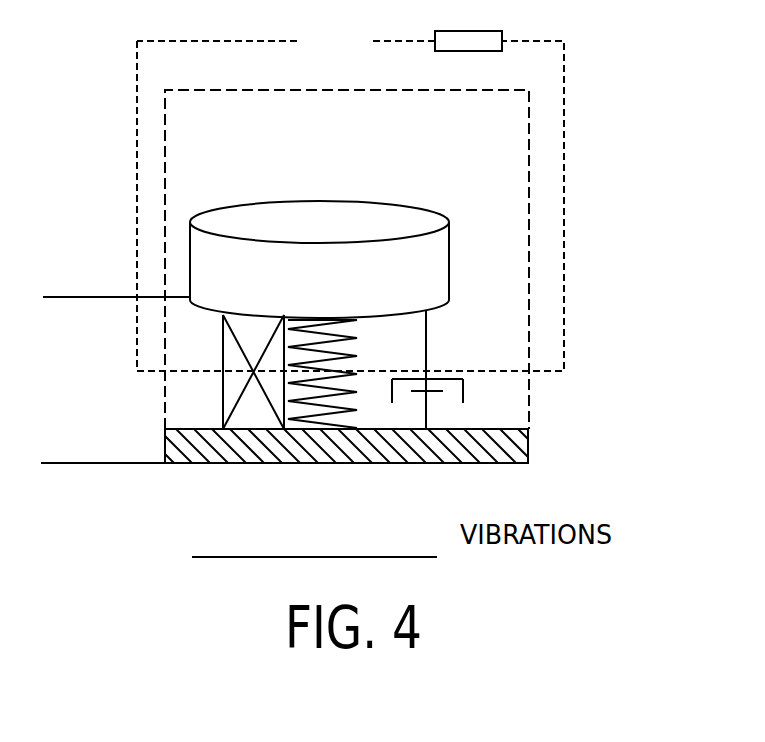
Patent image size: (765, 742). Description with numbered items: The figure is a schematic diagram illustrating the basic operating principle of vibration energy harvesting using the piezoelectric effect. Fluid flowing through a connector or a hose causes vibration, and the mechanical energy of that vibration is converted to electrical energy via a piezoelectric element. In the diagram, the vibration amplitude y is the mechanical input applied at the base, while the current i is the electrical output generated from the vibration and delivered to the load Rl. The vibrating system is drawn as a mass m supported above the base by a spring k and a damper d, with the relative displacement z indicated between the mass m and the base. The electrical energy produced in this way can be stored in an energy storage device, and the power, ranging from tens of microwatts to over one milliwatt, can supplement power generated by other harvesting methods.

The current i is at (362, 41).
The load resistor Rl is at (468, 25).
The seismic mass m is at (319, 259).
The spring stiffness k is at (336, 374).
The damper d is at (444, 369).
The relative displacement z is at (117, 463).
The vibration amplitude y is at (324, 472).